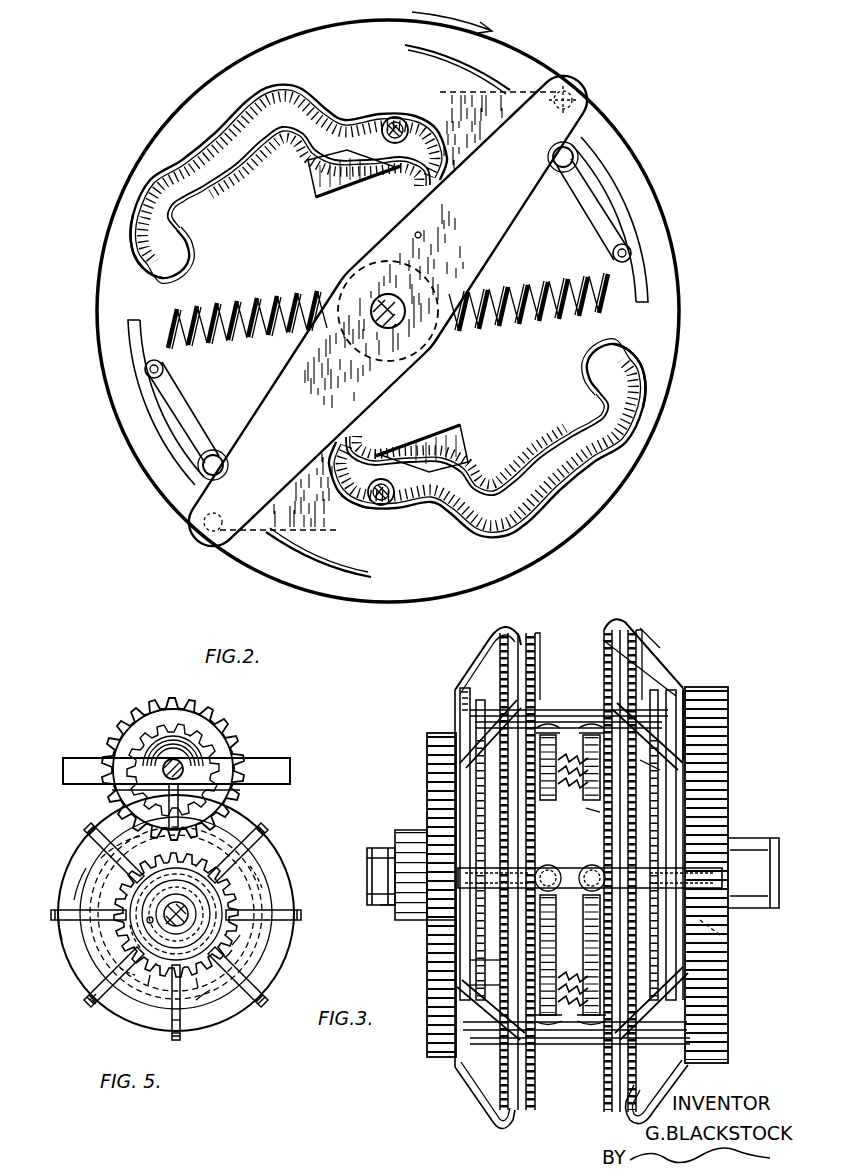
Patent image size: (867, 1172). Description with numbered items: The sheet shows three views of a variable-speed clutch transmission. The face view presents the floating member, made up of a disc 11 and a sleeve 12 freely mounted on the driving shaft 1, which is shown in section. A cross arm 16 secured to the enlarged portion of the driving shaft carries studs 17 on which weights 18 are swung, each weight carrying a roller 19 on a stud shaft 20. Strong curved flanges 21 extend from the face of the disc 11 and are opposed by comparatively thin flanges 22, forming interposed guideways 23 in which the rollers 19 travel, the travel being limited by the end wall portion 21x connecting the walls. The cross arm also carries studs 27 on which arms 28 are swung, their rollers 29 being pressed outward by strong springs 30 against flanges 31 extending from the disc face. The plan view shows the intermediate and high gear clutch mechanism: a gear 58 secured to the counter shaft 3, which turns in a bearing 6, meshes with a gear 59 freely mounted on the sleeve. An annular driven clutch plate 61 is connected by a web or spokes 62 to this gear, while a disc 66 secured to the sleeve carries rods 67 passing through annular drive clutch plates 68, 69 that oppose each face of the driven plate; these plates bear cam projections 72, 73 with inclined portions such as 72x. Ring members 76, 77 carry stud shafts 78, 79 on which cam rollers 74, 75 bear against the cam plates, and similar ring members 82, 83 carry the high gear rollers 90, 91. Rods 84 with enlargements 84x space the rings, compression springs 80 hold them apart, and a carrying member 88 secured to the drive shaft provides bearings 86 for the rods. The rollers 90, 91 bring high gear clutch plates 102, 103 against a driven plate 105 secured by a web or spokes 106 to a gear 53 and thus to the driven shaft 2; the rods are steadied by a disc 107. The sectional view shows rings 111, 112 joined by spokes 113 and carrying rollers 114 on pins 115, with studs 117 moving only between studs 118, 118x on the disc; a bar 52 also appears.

In FIG. 2, the disc 11 is at (165, 470).
In FIG. 2, the sleeve 12 is at (402, 300).
In FIG. 2, the cross arm 16 is at (368, 402).
In FIG. 2, the stud 17 is at (590, 100).
In FIG. 2, the weight 18 is at (495, 102).
In FIG. 2, the roller 19 is at (395, 116).
In FIG. 2, the stud shaft 20 is at (392, 145).
In FIG. 2, the curved flange 21 is at (302, 88).
In FIG. 2, the end wall portion 21x is at (190, 270).
In FIG. 2, the thin flange 22 is at (262, 163).
In FIG. 2, the guideway 23 is at (388, 314).
In FIG. 2, the stud 27 is at (578, 157).
In FIG. 2, the arm 28 is at (596, 232).
In FIG. 2, the roller 29 is at (634, 258).
In FIG. 2, the spring 30 is at (272, 303).
In FIG. 2, the flange 31 is at (628, 208).
In FIG. 5, the driving shaft 1 is at (248, 890).
In FIG. 3, the driving shaft 1 is at (366, 878).
In FIG. 3, the driven shaft 2 is at (748, 848).
In FIG. 5, the counter shaft 3 is at (184, 770).
In FIG. 3, the bearing 6 is at (590, 858).
In FIG. 5, the bar 52 is at (232, 775).
In FIG. 3, the gear 53 is at (728, 702).
In FIG. 5, the gear 58 is at (232, 790).
In FIG. 5, the gear 59 is at (118, 885).
In FIG. 3, the gear 59 is at (428, 952).
In FIG. 3, the driven clutch plate 61 is at (528, 650).
In FIG. 5, the web or spokes 62 is at (90, 822).
In FIG. 3, the web or spokes 62 is at (478, 660).
In FIG. 5, the disc 66 is at (74, 895).
In FIG. 3, the disc 66 is at (460, 700).
In FIG. 5, the rod 67 is at (98, 858).
In FIG. 3, the rod 67 is at (482, 712).
In FIG. 5, the drive clutch plate 68 is at (262, 826).
In FIG. 3, the drive clutch plate 68 is at (495, 628).
In FIG. 3, the drive clutch plate 69 is at (537, 645).
In FIG. 5, the projection 72 is at (148, 1000).
In FIG. 3, the projection 72 is at (500, 790).
In FIG. 5, the inclined portion 72x is at (176, 1020).
In FIG. 5, the projection 73 is at (130, 935).
In FIG. 3, the projection 73 is at (525, 792).
In FIG. 5, the cam roller 74 is at (118, 952).
In FIG. 3, the cam roller 74 is at (378, 908).
In FIG. 3, the cam roller 75 is at (560, 905).
In FIG. 5, the ring member 76 is at (198, 1000).
In FIG. 3, the ring member 76 is at (490, 955).
In FIG. 3, the ring member 77 is at (490, 975).
In FIG. 3, the stud shaft 78 is at (400, 838).
In FIG. 3, the stud shaft 79 is at (430, 928).
In FIG. 3, the compression spring 80 is at (562, 1040).
In FIG. 3, the ring member 82 is at (592, 808).
In FIG. 3, the ring member 83 is at (668, 765).
In FIG. 3, the rod 84 is at (590, 1042).
In FIG. 3, the enlargement 84x is at (465, 1000).
In FIG. 5, the bearing 86 is at (140, 905).
In FIG. 5, the carrying member 88 is at (148, 920).
In FIG. 3, the roller 90 is at (570, 807).
In FIG. 3, the roller 91 is at (720, 935).
In FIG. 3, the high gear clutch plate 102 is at (605, 648).
In FIG. 3, the high gear clutch plate 103 is at (642, 660).
In FIG. 3, the driven plate 105 is at (640, 632).
In FIG. 3, the web or spokes 106 is at (655, 645).
In FIG. 3, the disc 107 is at (684, 690).
In FIG. 5, the ring 111 is at (200, 985).
In FIG. 5, the ring 112 is at (152, 980).
In FIG. 5, the spoke 113 is at (255, 870).
In FIG. 5, the roller 114 is at (240, 935).
In FIG. 5, the pin 115 is at (232, 950).
In FIG. 5, the stud 117 is at (124, 972).
In FIG. 5, the stud 118 is at (60, 927).
In FIG. 5, the stud 118x is at (110, 1008).